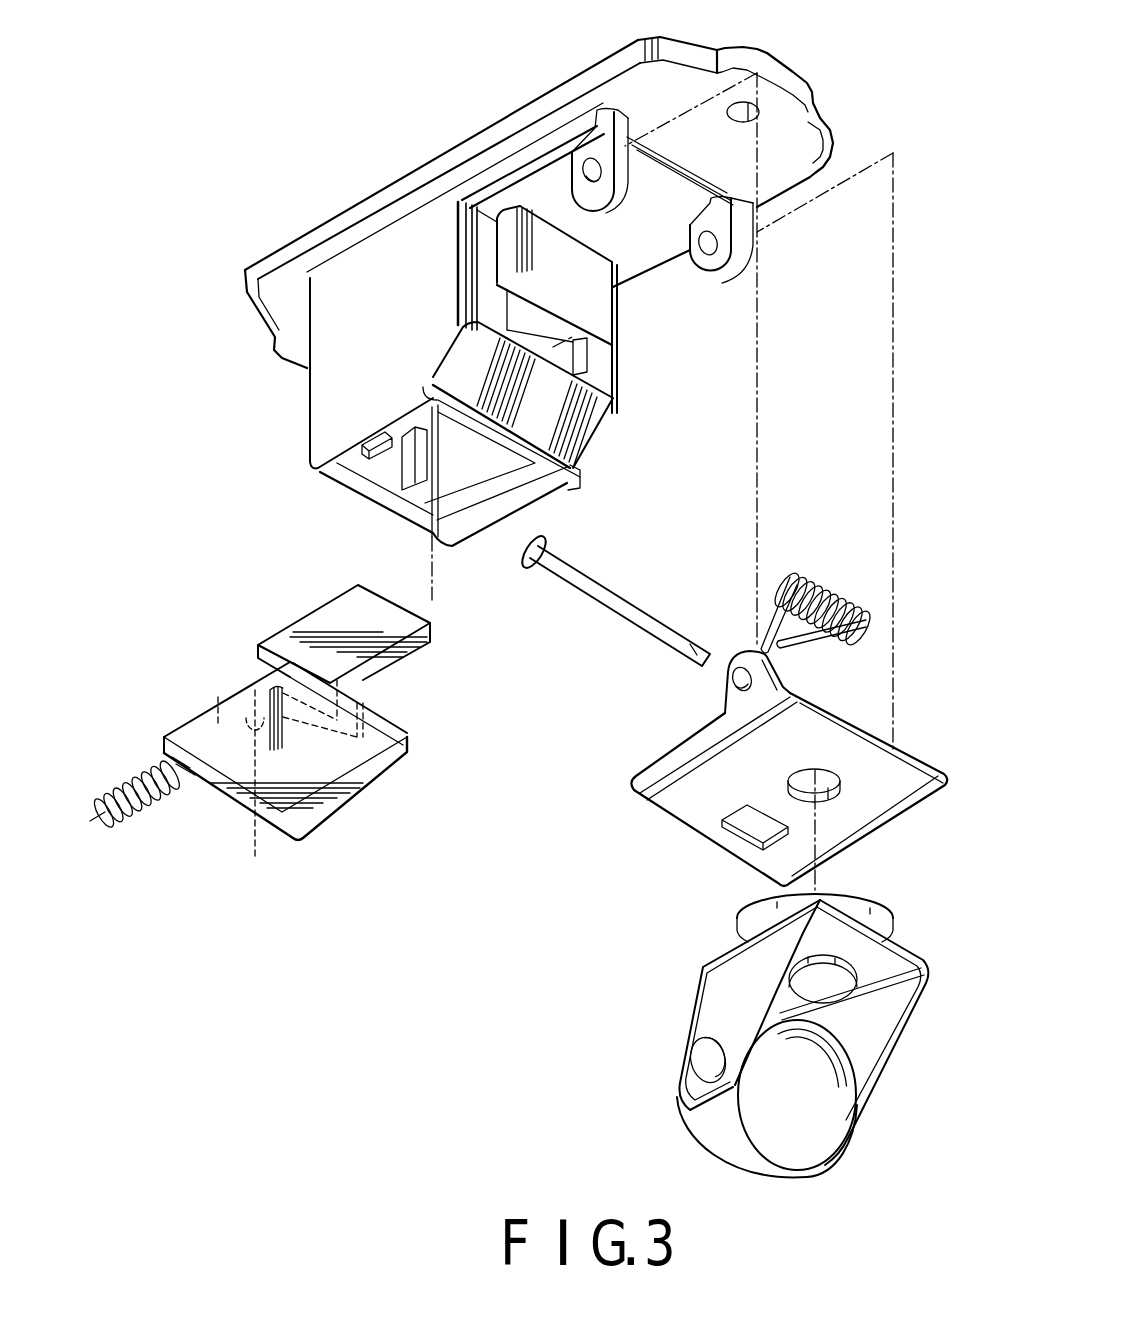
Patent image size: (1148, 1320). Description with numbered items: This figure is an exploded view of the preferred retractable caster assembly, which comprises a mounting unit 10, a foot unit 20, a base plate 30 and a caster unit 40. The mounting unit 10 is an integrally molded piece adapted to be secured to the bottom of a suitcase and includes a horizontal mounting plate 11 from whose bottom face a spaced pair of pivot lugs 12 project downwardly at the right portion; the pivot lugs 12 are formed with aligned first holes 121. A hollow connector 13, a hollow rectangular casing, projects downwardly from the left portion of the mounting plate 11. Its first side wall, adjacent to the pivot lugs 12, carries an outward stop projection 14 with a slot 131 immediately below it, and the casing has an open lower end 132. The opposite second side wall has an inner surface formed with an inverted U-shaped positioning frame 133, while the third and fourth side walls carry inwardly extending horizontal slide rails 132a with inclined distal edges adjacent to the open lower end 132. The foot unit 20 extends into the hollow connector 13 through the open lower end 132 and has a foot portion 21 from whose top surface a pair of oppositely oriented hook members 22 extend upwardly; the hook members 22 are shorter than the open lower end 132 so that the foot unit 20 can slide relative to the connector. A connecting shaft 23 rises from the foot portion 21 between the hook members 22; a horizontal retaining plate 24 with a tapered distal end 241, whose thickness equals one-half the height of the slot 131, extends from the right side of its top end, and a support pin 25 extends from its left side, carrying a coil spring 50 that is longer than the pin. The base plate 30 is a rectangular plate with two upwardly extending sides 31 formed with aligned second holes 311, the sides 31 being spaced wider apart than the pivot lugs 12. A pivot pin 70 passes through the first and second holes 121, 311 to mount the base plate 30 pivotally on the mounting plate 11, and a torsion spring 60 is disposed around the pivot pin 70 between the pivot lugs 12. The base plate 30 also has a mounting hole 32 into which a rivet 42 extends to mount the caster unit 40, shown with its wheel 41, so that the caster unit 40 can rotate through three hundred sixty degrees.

The mounting unit 10 is at (417, 172).
The mounting plate 11 is at (640, 133).
The pivot lugs 12 is at (733, 263).
The first holes 121 is at (703, 243).
The hollow connector 13 is at (322, 382).
The stop projection 14 is at (600, 305).
The slot 131 is at (573, 340).
The open lower end 132 is at (475, 457).
The slide rails 132a is at (466, 490).
The positioning frame 133 is at (415, 468).
The foot unit 20 is at (193, 717).
The foot portion 21 is at (363, 778).
The hook members 22 is at (250, 684).
The connecting shaft 23 is at (327, 678).
The retaining plate 24 is at (303, 623).
The tapered distal end 241 is at (428, 626).
The support pin 25 is at (258, 792).
The base plate 30 is at (873, 688).
The sides 31 is at (690, 733).
The second holes 311 is at (740, 670).
The mounting hole 32 is at (832, 796).
The caster unit 40 is at (897, 1048).
The wheel 41 is at (800, 1162).
The rivet 42 is at (830, 983).
The spring 50 is at (157, 803).
The torsion spring 60 is at (852, 554).
The pivot pin 70 is at (602, 615).